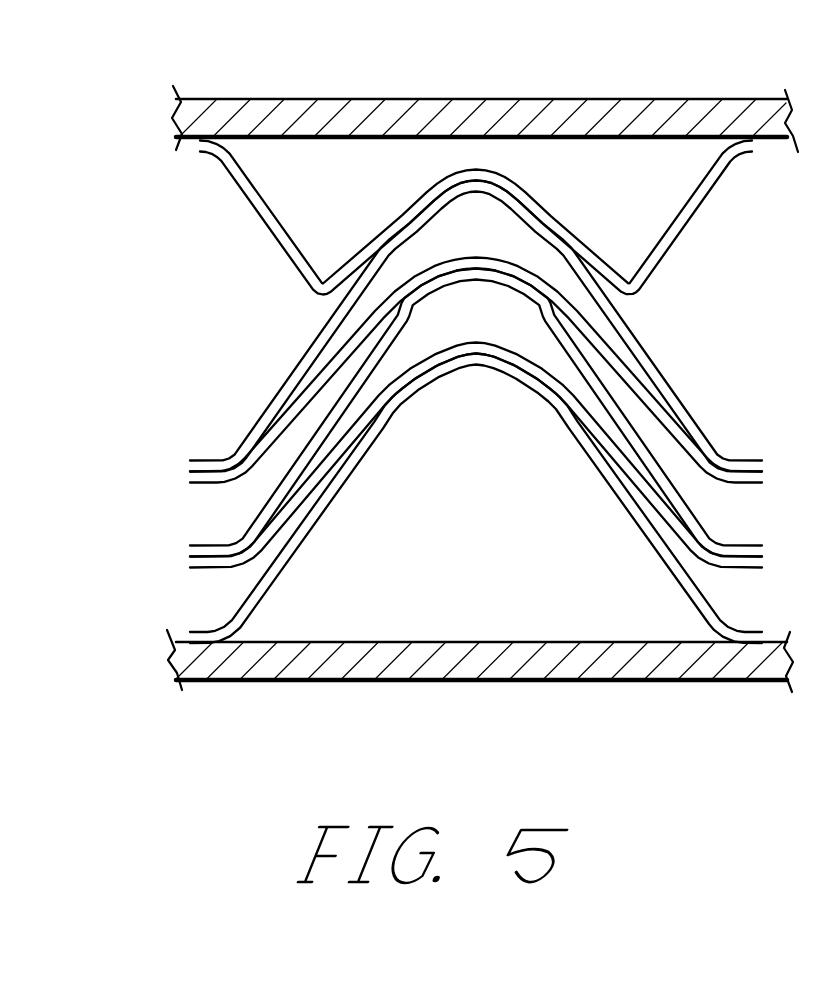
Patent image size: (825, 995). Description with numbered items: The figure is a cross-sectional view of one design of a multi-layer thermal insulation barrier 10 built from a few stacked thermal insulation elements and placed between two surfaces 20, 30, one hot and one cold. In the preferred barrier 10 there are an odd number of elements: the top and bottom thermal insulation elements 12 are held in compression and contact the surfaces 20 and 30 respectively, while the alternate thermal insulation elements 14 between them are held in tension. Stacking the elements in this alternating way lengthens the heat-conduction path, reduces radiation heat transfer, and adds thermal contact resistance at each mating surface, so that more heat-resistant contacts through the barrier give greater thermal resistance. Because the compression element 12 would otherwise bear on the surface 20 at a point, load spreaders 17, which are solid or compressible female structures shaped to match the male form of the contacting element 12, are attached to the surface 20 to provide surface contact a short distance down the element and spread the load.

The multi-layer thermal insulation barrier 10 is at (192, 331).
The thermal insulation element 12 is at (650, 363).
The thermal insulation element 14 is at (327, 468).
The load spreader 17 is at (597, 247).
The surface 20 is at (448, 105).
The surface 30 is at (588, 667).